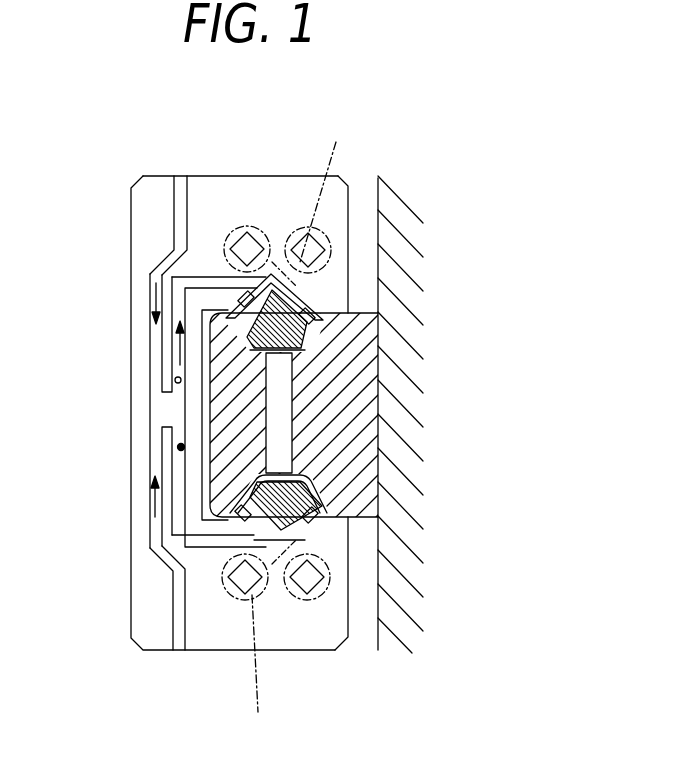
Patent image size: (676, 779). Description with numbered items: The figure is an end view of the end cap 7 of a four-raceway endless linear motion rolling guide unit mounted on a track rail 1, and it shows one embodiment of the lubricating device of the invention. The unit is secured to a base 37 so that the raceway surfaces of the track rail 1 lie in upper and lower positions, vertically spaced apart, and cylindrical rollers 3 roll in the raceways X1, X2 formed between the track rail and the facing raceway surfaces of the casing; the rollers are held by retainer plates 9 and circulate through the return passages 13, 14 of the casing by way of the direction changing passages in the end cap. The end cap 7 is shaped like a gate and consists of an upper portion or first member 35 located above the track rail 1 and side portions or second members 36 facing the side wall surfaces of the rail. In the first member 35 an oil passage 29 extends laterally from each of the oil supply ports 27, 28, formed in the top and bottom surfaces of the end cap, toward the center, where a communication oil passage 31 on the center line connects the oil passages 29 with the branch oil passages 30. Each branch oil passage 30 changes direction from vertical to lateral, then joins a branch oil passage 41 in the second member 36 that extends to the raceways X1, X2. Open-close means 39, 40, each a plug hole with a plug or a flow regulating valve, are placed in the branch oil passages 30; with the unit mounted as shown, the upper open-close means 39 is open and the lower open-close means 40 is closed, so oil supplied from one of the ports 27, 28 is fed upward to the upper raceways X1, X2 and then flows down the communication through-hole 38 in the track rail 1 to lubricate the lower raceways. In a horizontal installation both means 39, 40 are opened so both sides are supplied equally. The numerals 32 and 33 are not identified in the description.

The track rail 1 is at (255, 407).
The cylindrical rollers 3 is at (240, 300).
The end cap 7 is at (162, 170).
The retainer plate 9 is at (313, 487).
The return passage 13 is at (318, 228).
The return passage 14 is at (292, 434).
The oil supply port 27 is at (182, 176).
The oil supply port 28 is at (178, 651).
The oil passage 29 is at (158, 373).
The branch oil passage 30 is at (187, 326).
The communication oil passage 31 is at (163, 410).
The supply channel 32 is at (150, 289).
The partition wall 33 is at (160, 346).
The upper portion (first member) of end cap 35 is at (131, 203).
The side portion (second member) of end cap 36 is at (287, 186).
The base 37 is at (398, 348).
The communication through-hole 38 is at (283, 440).
The open-close means 39 is at (175, 381).
The open-close means 40 is at (178, 446).
The branch oil passage 41 is at (262, 545).
The raceway X1 is at (92, 574).
The raceway X2 is at (430, 548).